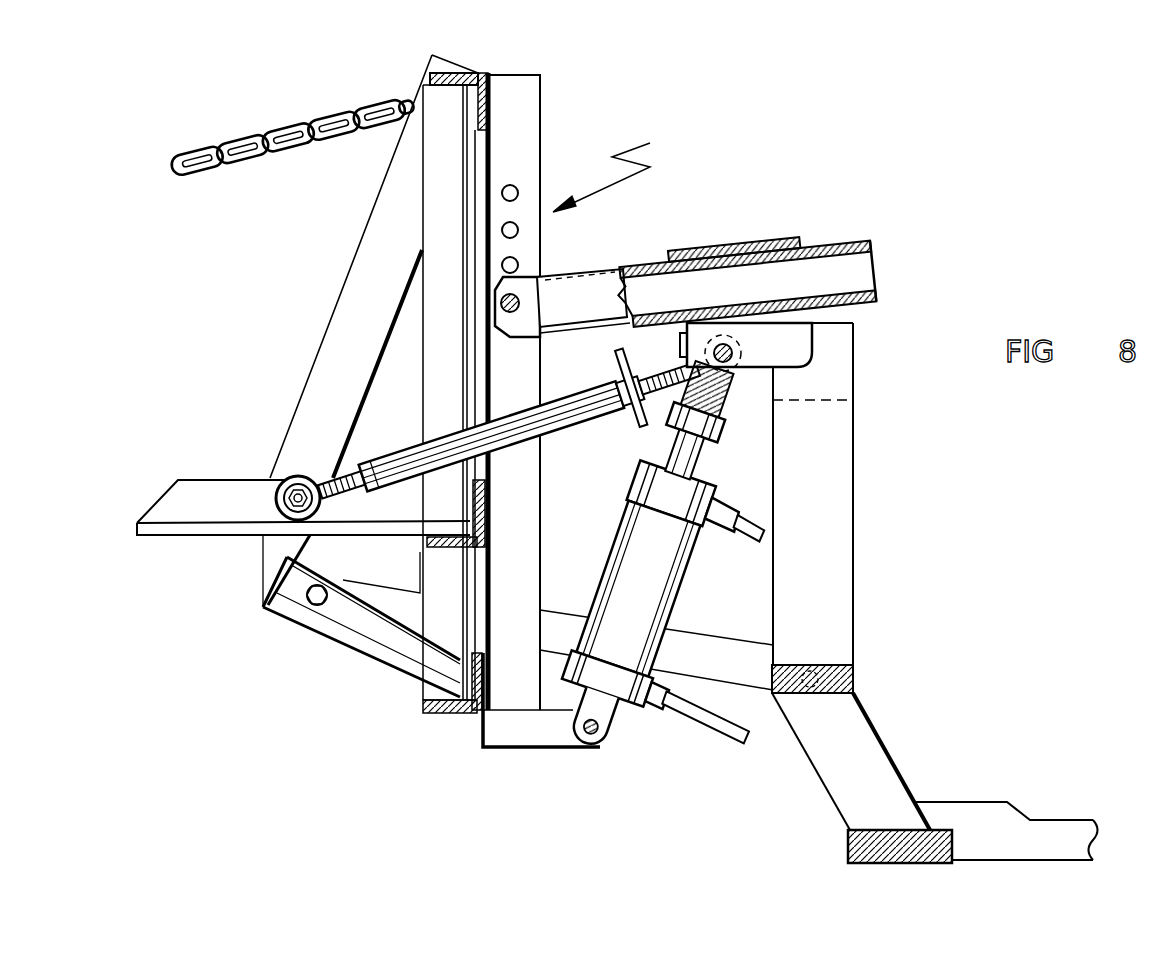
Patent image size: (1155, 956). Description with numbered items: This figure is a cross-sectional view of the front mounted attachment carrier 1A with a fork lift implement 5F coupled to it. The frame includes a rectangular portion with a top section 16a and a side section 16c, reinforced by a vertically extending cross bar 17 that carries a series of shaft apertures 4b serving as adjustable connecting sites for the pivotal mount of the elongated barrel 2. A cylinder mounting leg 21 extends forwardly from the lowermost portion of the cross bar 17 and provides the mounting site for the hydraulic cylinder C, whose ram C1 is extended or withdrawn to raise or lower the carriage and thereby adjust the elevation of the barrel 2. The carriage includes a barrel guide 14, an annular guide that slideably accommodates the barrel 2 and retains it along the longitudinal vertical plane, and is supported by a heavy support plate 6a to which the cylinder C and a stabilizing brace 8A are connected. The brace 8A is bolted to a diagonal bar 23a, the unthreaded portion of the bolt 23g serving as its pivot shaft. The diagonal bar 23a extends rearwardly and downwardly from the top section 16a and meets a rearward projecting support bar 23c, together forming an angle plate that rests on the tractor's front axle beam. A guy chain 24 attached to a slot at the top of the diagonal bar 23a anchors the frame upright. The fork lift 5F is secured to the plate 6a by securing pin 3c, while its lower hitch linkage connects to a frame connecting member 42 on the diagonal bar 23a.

The front mounted attachment carrier 1A is at (618, 171).
The elongated barrel 2 is at (828, 240).
The securing pin 3c is at (803, 343).
The shaft apertures 4b is at (515, 293).
The fork lift implement 5F is at (878, 730).
The support plate 6a is at (698, 338).
The stabilizing brace 8A is at (574, 425).
The barrel guide 14 is at (742, 243).
The top section 16a is at (455, 73).
The side section 16c is at (436, 203).
The cross bar 17 is at (541, 84).
The cylinder mounting leg 21 is at (543, 748).
The diagonal bar 23a is at (348, 312).
The rearward projecting support bar 23c is at (207, 545).
The bolt 23g is at (288, 482).
The guy chain 24 is at (259, 137).
The frame connecting member 42 is at (323, 587).
The hydraulic cylinder C is at (612, 562).
The ram C1 is at (705, 466).